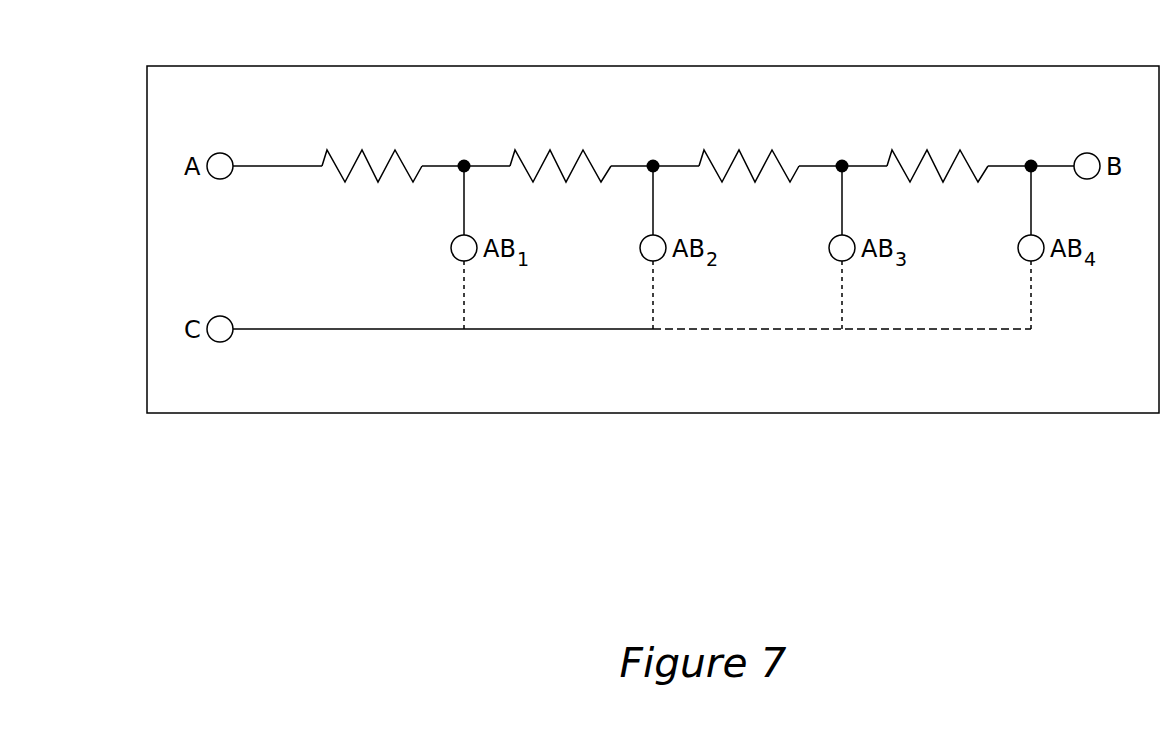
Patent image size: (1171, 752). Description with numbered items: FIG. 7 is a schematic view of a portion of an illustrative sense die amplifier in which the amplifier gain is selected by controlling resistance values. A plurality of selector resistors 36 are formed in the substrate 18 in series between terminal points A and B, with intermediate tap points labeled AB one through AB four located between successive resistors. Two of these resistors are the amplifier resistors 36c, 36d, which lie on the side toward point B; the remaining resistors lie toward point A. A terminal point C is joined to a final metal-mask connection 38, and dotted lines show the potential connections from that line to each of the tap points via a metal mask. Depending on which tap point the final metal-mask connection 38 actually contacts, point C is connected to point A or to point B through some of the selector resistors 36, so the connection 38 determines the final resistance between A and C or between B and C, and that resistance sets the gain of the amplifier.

The substrate 18 is at (1033, 83).
The selector resistors 36 is at (659, 167).
The amplifier resistor 36c is at (533, 182).
The amplifier resistor 36d is at (345, 182).
The final metal-mask connection 38 is at (559, 329).